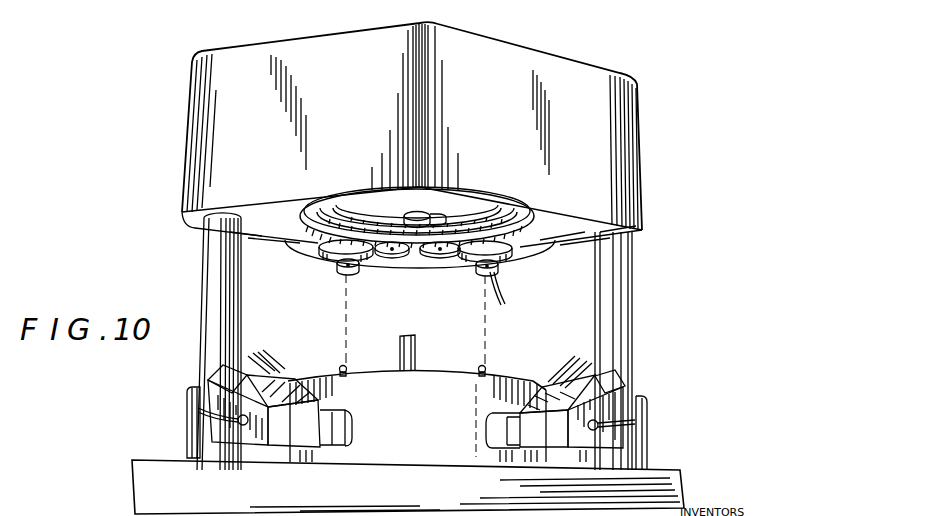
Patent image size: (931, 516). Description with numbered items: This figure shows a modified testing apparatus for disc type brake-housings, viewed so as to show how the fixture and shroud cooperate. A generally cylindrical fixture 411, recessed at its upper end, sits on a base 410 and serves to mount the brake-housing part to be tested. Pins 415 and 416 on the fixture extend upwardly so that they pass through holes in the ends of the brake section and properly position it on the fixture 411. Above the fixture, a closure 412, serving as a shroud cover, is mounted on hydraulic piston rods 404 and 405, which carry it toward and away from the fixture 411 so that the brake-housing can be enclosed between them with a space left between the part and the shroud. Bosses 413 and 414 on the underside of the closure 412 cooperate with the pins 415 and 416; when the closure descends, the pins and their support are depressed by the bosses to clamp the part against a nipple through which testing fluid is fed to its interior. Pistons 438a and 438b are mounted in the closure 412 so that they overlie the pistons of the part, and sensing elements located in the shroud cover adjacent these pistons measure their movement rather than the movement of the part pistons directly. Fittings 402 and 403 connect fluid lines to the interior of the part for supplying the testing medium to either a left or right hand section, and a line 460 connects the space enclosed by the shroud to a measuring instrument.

The fitting 402 is at (294, 436).
The fitting 403 is at (552, 438).
The hydraulic piston rod 404 is at (207, 290).
The hydraulic piston rod 405 is at (632, 297).
The base 410 is at (145, 489).
The fixture 411 is at (410, 445).
The closure 412 is at (182, 197).
The boss 413 is at (338, 266).
The boss 414 is at (500, 269).
The pin 415 is at (340, 366).
The pin 416 is at (480, 366).
The piston 438a is at (391, 256).
The piston 438b is at (443, 256).
The line 460 is at (420, 279).